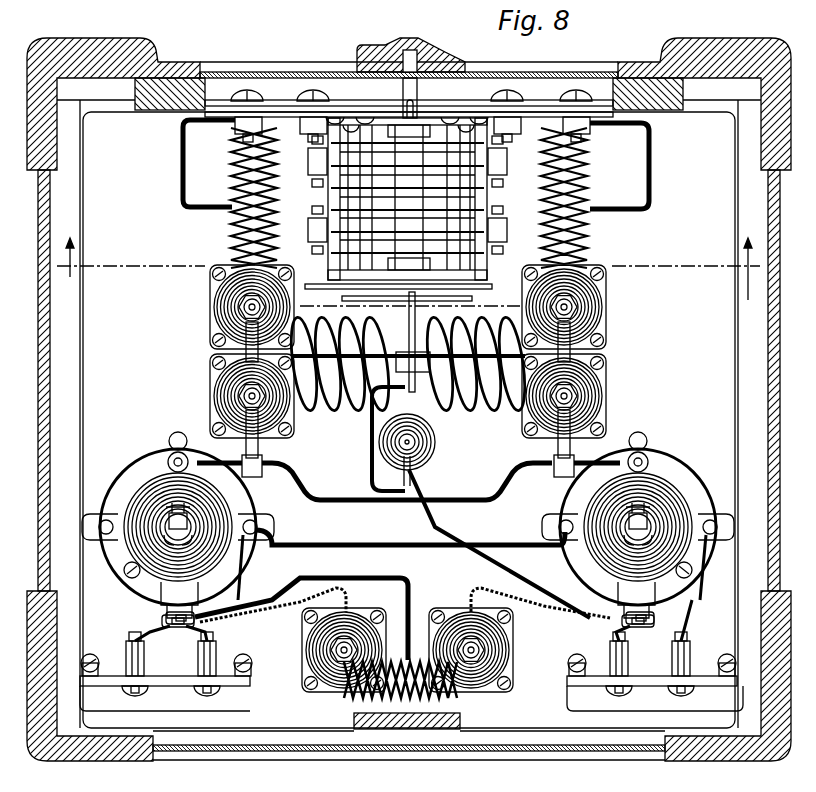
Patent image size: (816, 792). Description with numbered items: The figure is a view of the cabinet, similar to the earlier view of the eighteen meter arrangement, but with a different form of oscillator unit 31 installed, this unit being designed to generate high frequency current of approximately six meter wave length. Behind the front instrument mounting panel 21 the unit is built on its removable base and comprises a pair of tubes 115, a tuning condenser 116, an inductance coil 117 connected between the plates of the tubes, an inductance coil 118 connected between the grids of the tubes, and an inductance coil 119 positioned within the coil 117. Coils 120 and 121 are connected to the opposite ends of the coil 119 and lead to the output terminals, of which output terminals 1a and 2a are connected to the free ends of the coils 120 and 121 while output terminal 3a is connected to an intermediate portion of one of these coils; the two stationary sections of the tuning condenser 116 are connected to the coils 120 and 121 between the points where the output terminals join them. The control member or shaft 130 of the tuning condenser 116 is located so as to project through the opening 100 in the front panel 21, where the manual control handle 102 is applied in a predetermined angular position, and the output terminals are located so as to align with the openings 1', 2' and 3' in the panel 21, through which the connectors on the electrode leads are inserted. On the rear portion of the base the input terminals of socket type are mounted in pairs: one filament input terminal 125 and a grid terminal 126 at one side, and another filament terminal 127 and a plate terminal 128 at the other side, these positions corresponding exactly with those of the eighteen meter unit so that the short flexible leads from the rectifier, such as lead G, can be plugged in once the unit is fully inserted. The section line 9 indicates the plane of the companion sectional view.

The opening in front panel 2' is at (287, 79).
The output terminal 2a is at (252, 92).
The front instrument mounting panel 21 is at (282, 72).
The manual control handle 102 is at (382, 50).
The opening in front panel 100 is at (429, 72).
The opening in front panel 1' is at (502, 92).
The output terminal 1a is at (508, 92).
The output terminal 3a is at (577, 90).
The opening in front panel 3' is at (609, 81).
The control member or shaft of tuning condenser 130 is at (418, 91).
The inductance coil 120 is at (273, 218).
The tuning condenser 116 is at (489, 197).
The inductance coil 121 is at (589, 231).
The inductance coil 119 is at (405, 350).
The inductance coil 117 is at (337, 406).
The oscillator unit 31 is at (640, 423).
The tubes 115 is at (246, 563).
The ground clamp G is at (413, 627).
The filament input terminal 125 is at (122, 693).
The grid terminal 126 is at (207, 696).
The plate terminal 128 is at (622, 696).
The filament terminal 127 is at (683, 696).
The inductance coil 118 is at (408, 700).
The section line 9 is at (408, 279).